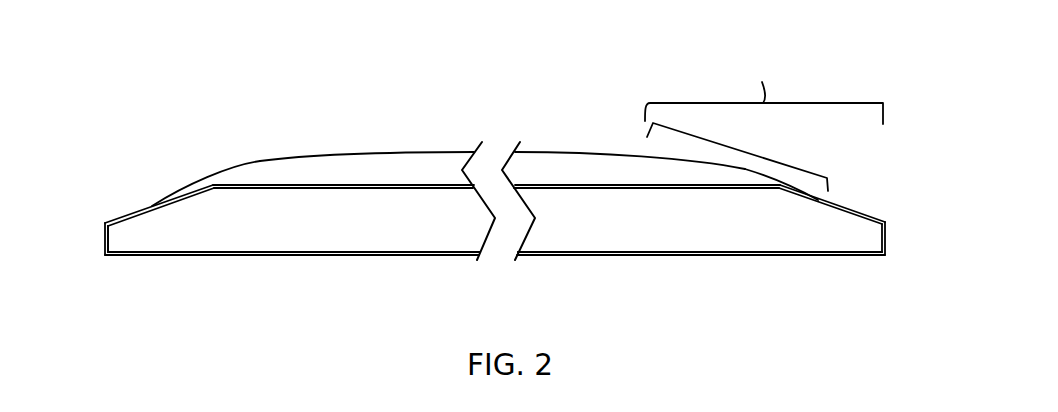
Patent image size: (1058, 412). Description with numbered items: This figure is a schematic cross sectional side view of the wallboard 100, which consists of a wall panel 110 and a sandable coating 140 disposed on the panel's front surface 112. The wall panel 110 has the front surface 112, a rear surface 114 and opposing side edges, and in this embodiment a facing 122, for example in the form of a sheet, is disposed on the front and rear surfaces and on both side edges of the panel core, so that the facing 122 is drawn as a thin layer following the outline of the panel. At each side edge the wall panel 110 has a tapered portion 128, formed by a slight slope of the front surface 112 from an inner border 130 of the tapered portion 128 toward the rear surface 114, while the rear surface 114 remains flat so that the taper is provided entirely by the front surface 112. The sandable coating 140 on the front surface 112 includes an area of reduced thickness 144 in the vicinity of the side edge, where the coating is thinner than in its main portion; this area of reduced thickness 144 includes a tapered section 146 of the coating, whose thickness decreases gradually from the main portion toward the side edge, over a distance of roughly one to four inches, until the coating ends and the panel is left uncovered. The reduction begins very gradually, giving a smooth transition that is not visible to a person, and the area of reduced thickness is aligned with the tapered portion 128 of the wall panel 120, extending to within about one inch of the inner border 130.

The wallboard 100 is at (573, 117).
The wall panel 110 is at (617, 234).
The front surface 112 is at (318, 184).
The rear surface 114 is at (320, 258).
The wall panel 120 is at (213, 222).
The facing 122 is at (145, 257).
The tapered portion 128 is at (137, 207).
The inner border 130 is at (212, 182).
The sandable coating 140 is at (617, 180).
The area of reduced thickness 144 is at (764, 88).
The tapered section 146 is at (740, 150).